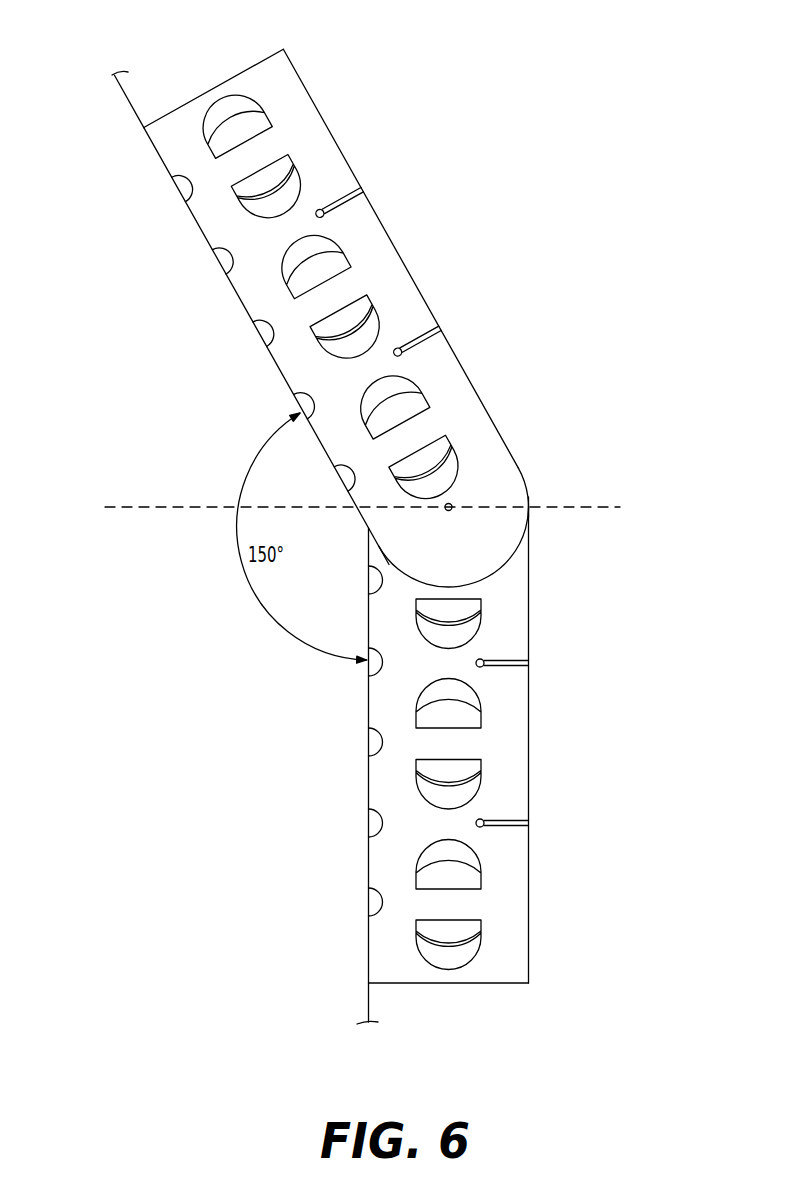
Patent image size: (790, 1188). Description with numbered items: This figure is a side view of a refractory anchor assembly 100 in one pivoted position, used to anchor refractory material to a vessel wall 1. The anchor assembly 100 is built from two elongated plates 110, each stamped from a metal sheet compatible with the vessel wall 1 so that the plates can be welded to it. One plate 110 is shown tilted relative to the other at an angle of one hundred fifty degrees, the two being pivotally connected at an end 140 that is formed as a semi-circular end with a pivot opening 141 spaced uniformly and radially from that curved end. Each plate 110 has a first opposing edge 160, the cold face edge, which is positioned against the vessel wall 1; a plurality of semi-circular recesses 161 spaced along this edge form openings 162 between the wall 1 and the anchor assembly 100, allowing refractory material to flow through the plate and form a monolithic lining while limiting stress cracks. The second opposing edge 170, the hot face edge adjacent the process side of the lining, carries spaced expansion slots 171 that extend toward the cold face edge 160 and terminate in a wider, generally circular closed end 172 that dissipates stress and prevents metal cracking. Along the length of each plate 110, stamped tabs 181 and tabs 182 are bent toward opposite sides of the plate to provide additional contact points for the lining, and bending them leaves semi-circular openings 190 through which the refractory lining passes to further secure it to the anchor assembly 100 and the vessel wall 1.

The vessel wall 1 is at (127, 97).
The anchor assembly 100 is at (592, 276).
The elongated plate 110 is at (359, 531).
The end 140 is at (545, 485).
The pivot opening 141 is at (455, 505).
The first opposing edge 160 is at (195, 238).
The recesses 161 is at (183, 185).
The openings 162 is at (226, 264).
The second opposing edge 170 is at (415, 266).
The expansion slots 171 is at (346, 190).
The closed end 172 is at (367, 217).
The tabs 181 is at (233, 118).
The tabs 182 is at (284, 160).
The openings 190 is at (465, 633).